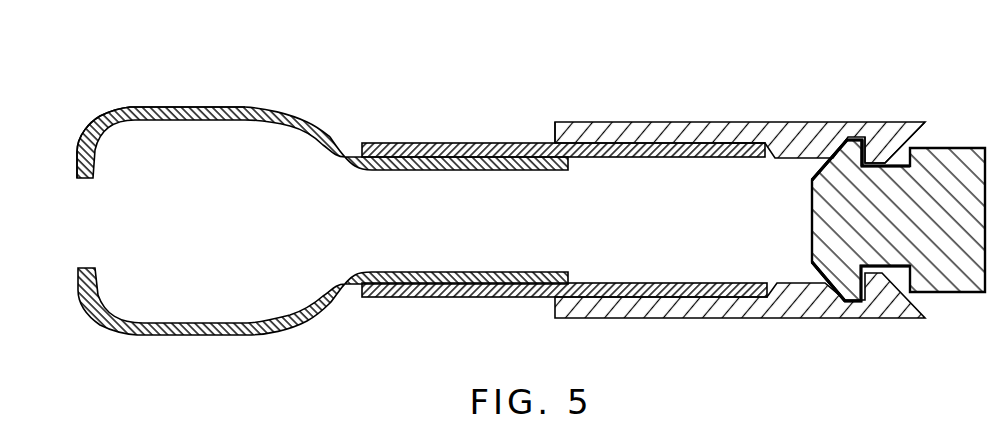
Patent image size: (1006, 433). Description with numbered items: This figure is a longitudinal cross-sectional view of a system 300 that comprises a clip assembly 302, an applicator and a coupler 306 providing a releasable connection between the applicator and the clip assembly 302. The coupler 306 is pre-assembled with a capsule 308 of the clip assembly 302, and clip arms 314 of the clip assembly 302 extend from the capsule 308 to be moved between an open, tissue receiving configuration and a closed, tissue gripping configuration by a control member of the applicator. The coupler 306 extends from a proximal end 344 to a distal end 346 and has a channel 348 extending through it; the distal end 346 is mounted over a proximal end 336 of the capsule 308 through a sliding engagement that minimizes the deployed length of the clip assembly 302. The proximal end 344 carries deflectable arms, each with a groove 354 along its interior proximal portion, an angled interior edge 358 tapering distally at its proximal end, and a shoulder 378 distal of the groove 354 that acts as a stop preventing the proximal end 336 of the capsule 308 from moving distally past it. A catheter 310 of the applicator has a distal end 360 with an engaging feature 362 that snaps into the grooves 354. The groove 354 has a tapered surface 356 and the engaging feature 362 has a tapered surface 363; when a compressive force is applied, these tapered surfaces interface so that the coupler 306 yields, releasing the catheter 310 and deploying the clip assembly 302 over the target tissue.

The system 300 is at (478, 90).
The clip assembly 302 is at (341, 108).
The coupler 306 is at (611, 119).
The capsule 308 is at (435, 140).
The catheter 310 is at (940, 275).
The clip arms 314 is at (186, 99).
The proximal end 336 is at (738, 142).
The proximal end 344 is at (897, 130).
The distal end 346 is at (553, 128).
The channel 348 is at (697, 184).
The groove 354 is at (858, 140).
The tapered surface 356 is at (843, 162).
The angled interior edge 358 is at (933, 148).
The distal end 360 is at (857, 160).
The engaging feature 362 is at (840, 265).
The tapered surface 363 is at (825, 277).
The shoulder 378 is at (772, 283).